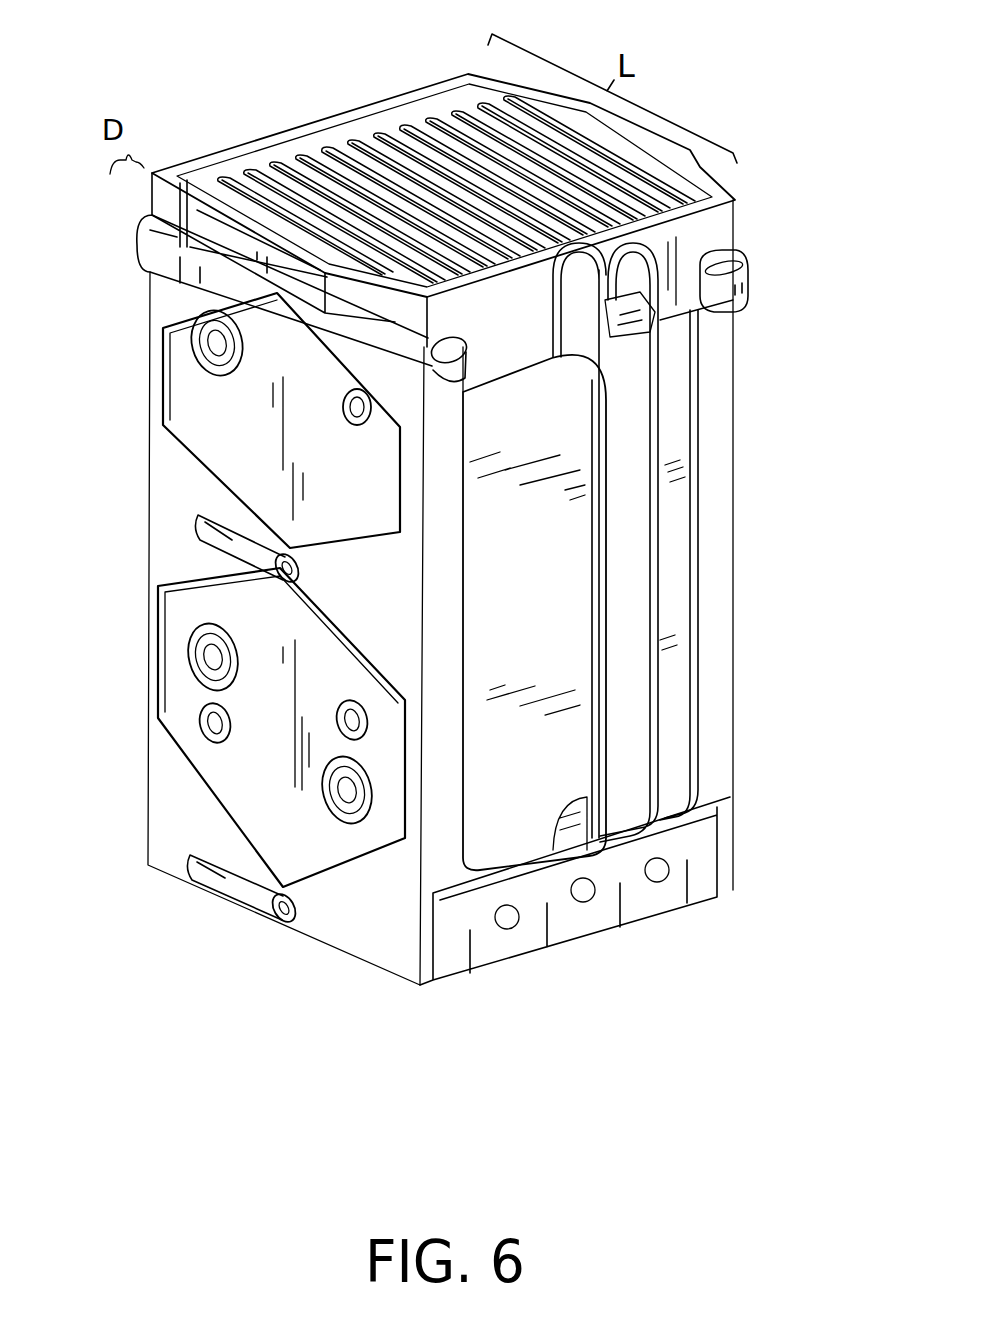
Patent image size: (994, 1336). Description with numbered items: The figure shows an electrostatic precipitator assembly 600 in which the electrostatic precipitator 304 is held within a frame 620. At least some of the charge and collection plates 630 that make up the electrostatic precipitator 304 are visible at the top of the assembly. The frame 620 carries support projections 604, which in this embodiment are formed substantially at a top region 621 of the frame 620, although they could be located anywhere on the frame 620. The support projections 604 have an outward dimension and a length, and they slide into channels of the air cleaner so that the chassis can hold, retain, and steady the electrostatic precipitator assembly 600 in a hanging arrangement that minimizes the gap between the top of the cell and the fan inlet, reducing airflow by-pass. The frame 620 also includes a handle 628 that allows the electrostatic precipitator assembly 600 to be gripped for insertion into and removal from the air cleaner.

The electrostatic precipitator assembly 600 is at (228, 1024).
The support projections 604 is at (222, 208).
The charge and collection plates 630 is at (404, 125).
The top region 621 is at (117, 186).
The frame 620 is at (733, 770).
The electrostatic precipitator 304 is at (678, 447).
The handle 628 is at (660, 592).